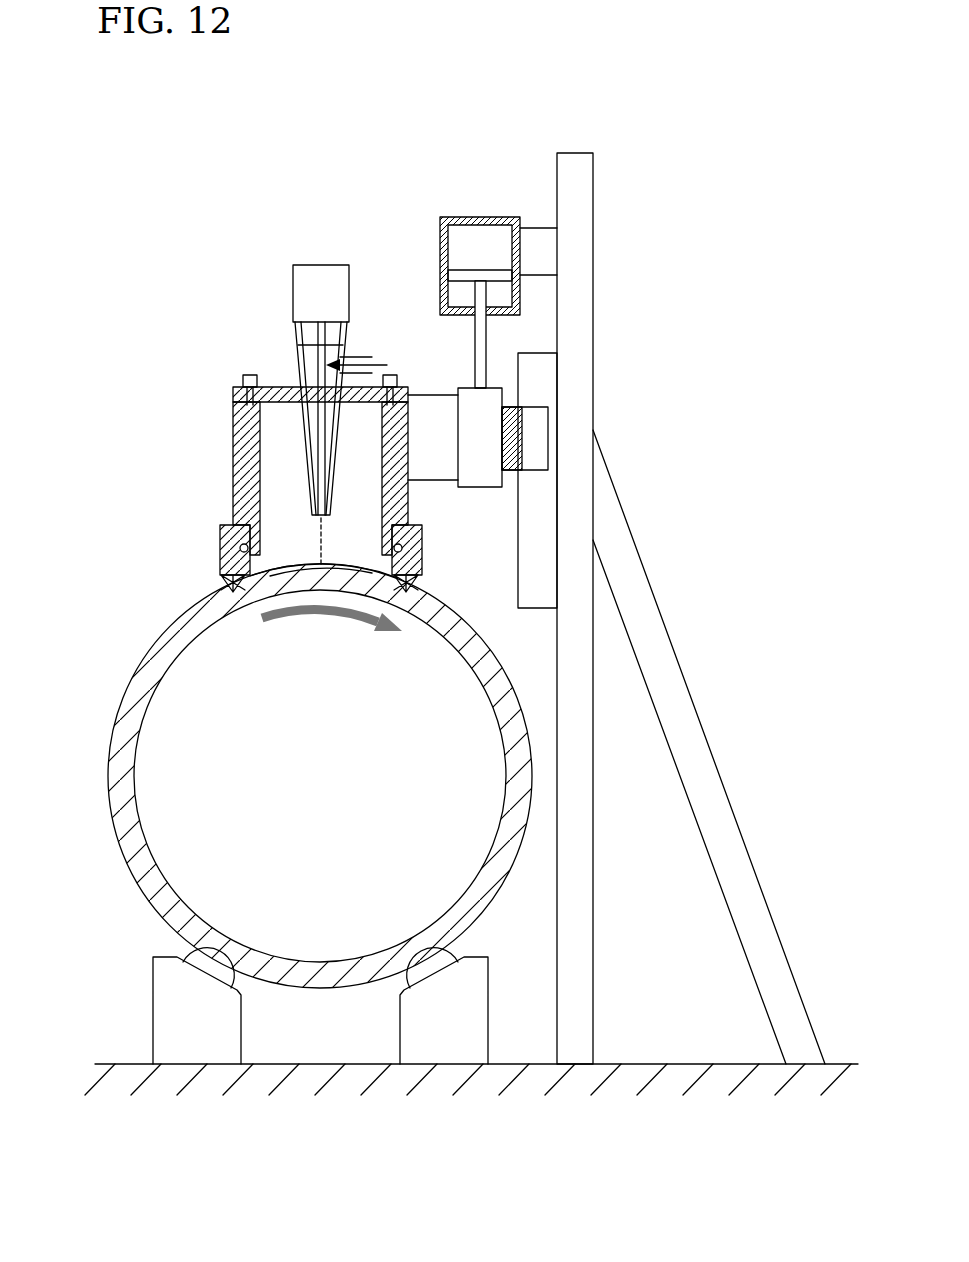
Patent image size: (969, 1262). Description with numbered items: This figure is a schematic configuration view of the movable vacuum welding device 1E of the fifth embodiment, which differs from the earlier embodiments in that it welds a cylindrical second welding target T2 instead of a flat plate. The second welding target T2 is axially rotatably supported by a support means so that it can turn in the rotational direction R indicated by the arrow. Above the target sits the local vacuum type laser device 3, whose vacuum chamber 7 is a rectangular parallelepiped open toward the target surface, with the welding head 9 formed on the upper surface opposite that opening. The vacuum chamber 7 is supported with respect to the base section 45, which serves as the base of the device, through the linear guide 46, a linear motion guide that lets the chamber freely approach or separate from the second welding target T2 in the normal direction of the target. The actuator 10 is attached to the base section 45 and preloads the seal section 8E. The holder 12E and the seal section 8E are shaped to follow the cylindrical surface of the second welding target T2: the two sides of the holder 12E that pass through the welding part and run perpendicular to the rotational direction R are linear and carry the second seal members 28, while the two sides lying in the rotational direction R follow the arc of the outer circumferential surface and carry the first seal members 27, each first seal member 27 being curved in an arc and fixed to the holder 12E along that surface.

The movable vacuum welding device 1E is at (232, 149).
The local vacuum type laser device 3 is at (256, 238).
The vacuum chamber 7 is at (242, 470).
The welding head 9 is at (328, 274).
The actuator 10 is at (476, 237).
The holder 12E is at (222, 548).
The seal section 8E is at (428, 582).
The first seal member 27 is at (297, 572).
The second seal member 28 is at (410, 586).
The base section 45 is at (582, 248).
The linear guide 46 is at (540, 428).
The second welding target T2 is at (166, 652).
The rotational direction R is at (311, 626).